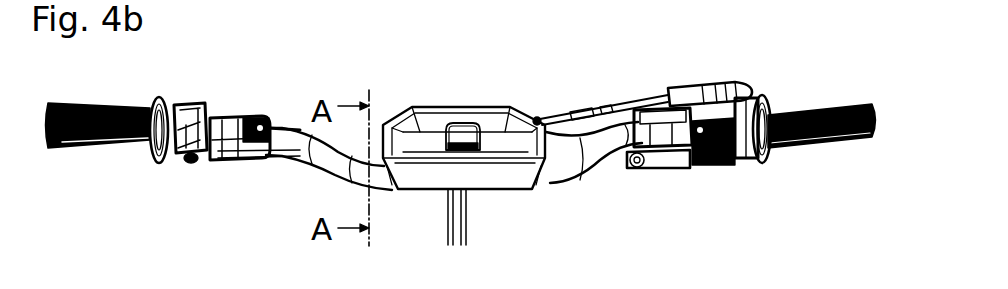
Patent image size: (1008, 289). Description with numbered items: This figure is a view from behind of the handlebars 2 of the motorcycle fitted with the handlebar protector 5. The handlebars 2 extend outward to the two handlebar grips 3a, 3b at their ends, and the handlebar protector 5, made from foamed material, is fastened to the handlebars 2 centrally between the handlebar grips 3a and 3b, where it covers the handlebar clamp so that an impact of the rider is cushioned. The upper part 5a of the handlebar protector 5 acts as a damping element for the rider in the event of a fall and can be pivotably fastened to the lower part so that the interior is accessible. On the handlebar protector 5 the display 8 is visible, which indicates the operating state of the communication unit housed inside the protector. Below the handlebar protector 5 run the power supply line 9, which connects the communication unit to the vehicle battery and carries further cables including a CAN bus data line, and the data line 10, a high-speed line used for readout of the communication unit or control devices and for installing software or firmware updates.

The handlebars 2 is at (295, 146).
The handlebar grip 3a is at (63, 148).
The handlebar grip 3b is at (843, 142).
The handlebar protector 5 is at (489, 118).
The upper part 5a is at (503, 147).
The display 8 is at (458, 143).
The power supply line 9 is at (468, 218).
The data line 10 is at (444, 218).